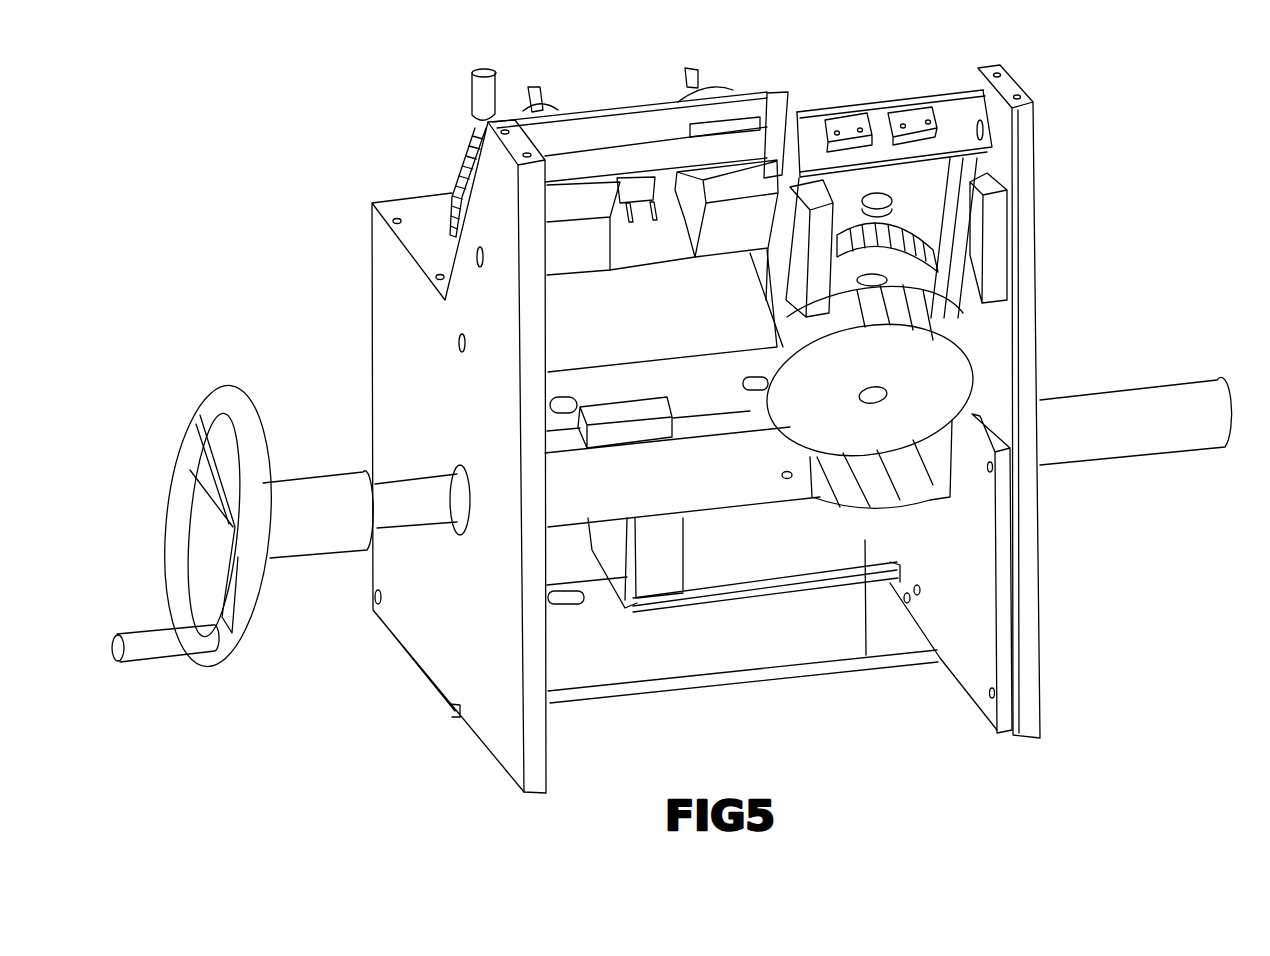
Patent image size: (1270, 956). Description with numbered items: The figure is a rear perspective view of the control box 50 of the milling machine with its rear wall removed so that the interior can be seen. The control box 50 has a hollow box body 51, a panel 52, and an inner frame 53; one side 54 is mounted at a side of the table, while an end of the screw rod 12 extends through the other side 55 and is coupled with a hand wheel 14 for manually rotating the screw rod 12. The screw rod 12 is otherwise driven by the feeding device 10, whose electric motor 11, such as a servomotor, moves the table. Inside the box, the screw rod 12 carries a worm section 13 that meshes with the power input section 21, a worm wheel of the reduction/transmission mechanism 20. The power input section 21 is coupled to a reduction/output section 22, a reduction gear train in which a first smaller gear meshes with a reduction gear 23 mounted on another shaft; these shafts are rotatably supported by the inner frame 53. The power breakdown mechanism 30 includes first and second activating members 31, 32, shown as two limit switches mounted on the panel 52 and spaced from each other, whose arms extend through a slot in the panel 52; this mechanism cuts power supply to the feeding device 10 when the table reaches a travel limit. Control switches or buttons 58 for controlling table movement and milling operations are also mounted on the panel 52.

The feeding device 10 is at (677, 638).
The electric motor 11 is at (760, 567).
The screw rod 12 is at (1157, 403).
The worm section 13 is at (863, 600).
The hand wheel 14 is at (202, 400).
The reduction/transmission mechanism 20 is at (967, 327).
The power input section 21 is at (973, 367).
The reduction/output section 22 is at (913, 242).
The reduction gear 23 is at (998, 218).
The power breakdown mechanism 30 is at (872, 94).
The first activating member 31 is at (840, 123).
The second activating member 32 is at (917, 112).
The control box 50 is at (355, 283).
The hollow box body 51 is at (578, 692).
The panel 52 is at (618, 103).
The inner frame 53 is at (937, 190).
The side 54 is at (1028, 570).
The other side 55 is at (530, 727).
The control switches or buttons 58 is at (477, 97).